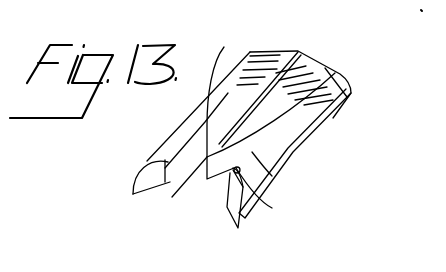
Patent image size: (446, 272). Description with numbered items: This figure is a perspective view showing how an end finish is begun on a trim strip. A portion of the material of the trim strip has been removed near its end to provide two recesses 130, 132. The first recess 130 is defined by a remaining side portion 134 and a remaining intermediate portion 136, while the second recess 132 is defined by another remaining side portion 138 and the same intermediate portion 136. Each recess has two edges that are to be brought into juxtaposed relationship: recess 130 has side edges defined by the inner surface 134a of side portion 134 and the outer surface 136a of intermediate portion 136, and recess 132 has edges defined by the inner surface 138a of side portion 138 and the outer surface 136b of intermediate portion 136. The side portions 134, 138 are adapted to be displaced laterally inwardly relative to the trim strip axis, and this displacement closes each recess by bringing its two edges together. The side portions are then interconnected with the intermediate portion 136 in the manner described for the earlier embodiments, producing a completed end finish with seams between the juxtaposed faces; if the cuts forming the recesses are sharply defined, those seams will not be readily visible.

The recess 130 is at (203, 172).
The recess 132 is at (220, 186).
The side portion 134 is at (166, 152).
The inner surface of side portion 134a is at (200, 135).
The intermediate portion 136 is at (267, 105).
The outer surface of intermediate portion 136a is at (214, 68).
The outer surface of intermediate portion 136b is at (272, 176).
The side portion 138 is at (291, 134).
The inner surface of side portion 138a is at (272, 208).